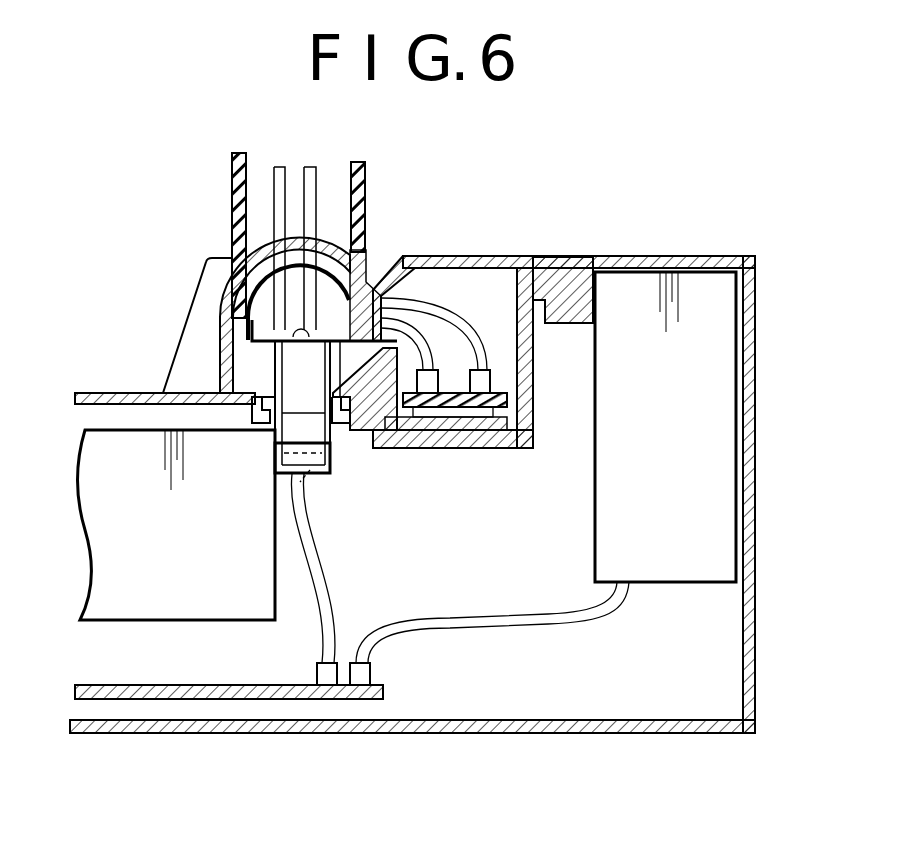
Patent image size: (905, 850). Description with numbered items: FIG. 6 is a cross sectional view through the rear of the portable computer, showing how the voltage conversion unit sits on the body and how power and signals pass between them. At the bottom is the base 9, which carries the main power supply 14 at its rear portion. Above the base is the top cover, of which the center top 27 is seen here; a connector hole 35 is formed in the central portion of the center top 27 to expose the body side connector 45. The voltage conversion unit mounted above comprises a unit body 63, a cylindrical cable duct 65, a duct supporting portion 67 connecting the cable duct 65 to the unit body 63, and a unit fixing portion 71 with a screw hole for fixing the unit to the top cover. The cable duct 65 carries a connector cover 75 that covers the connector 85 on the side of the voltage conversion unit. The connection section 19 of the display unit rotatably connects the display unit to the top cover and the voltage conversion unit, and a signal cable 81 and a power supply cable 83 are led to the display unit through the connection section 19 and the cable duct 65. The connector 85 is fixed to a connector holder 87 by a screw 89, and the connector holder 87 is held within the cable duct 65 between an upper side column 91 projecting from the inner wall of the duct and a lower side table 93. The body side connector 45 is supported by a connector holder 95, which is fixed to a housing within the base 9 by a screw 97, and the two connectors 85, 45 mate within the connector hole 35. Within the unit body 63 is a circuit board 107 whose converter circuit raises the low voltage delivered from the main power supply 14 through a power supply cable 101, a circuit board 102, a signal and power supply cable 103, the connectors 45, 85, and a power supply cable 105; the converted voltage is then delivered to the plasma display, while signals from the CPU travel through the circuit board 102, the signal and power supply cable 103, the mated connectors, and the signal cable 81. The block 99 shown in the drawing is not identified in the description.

The base 9 is at (755, 660).
The main power supply 14 is at (715, 345).
The connection section 19 is at (366, 184).
The center top 27 is at (652, 256).
The connector hole 35 is at (345, 440).
The body side connector 45 is at (327, 470).
The unit body 63 is at (512, 256).
The cable duct 65 is at (235, 212).
The duct supporting portion 67 is at (397, 255).
The unit fixing portion 71 is at (560, 256).
The connector cover 75 is at (262, 400).
The signal cable 81 is at (268, 175).
The power supply cable 83 is at (317, 182).
The connector 85 is at (290, 370).
The connector holder 87 is at (255, 305).
The screw 89 is at (368, 207).
The upper side column 91 is at (383, 258).
The lower side table 93 is at (392, 417).
The connector holder 95 is at (320, 478).
The screw 97 is at (345, 490).
The block 99 is at (224, 605).
The power supply cable 101 is at (497, 618).
The circuit board 102 is at (385, 697).
The signal and power supply cable 103 is at (332, 598).
The power supply cable 105 is at (460, 345).
The circuit board 107 is at (477, 435).